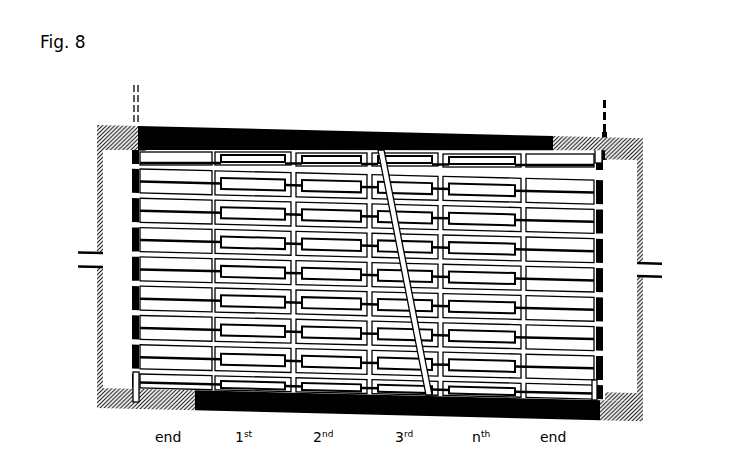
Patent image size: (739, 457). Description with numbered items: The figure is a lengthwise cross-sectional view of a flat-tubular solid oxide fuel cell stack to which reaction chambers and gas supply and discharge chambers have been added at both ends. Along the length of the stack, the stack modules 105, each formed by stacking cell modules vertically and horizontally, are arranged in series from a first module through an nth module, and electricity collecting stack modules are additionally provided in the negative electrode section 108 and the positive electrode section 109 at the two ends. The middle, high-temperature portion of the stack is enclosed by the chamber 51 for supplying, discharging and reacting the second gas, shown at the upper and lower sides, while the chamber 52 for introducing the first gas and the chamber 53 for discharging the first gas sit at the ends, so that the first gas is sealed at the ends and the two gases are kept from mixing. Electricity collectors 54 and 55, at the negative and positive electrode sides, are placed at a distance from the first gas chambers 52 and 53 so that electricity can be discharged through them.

The chamber for the supply, discharge and reaction of a second gas 51 is at (336, 129).
The chamber for introduction of a first gas 52 is at (96, 220).
The chamber for discharge of a first gas 53 is at (648, 228).
The electricity collector 54 is at (127, 94).
The electricity collector 55 is at (612, 106).
The stack module 105 is at (257, 176).
The negative electrode section 108 is at (176, 168).
The positive electrode section 109 is at (555, 176).